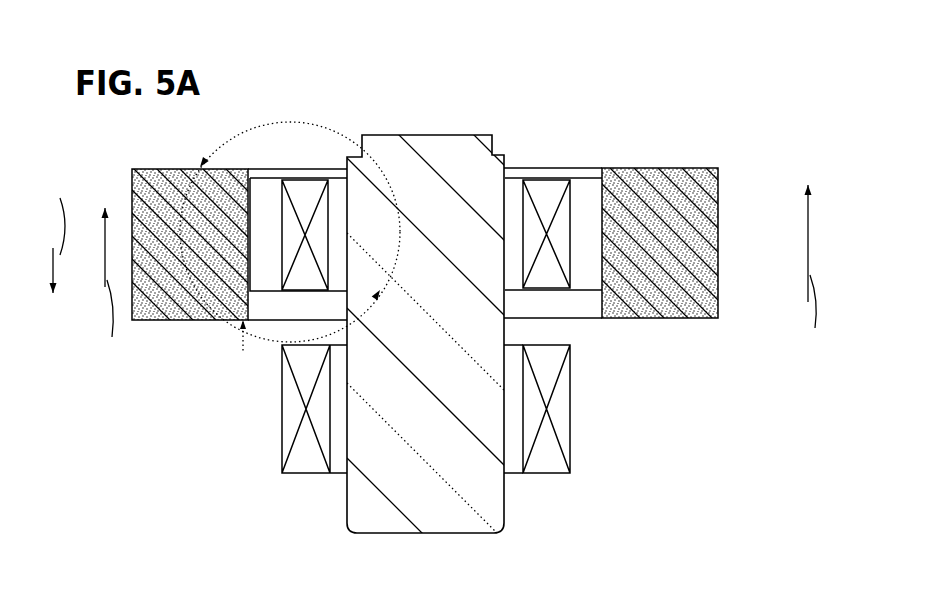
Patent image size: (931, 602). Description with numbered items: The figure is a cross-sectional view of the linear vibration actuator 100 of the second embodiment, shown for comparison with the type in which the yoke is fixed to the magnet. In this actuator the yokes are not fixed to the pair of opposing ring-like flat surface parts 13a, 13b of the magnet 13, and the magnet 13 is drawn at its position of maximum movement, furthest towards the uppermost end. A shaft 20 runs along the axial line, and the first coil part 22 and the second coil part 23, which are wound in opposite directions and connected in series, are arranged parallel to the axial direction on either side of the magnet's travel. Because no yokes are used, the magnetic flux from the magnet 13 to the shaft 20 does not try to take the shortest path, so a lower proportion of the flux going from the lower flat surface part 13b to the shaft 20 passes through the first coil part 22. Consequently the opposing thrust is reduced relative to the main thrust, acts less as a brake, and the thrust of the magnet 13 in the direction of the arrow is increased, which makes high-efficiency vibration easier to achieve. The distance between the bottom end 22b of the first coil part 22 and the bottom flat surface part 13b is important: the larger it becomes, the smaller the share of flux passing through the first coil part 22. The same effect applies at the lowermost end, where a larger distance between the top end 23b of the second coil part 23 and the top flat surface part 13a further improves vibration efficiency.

The linear vibration actuator 100 is at (690, 74).
The shaft 20 is at (450, 148).
The first coil part 22 is at (577, 207).
The bottom end of the first coil part 22b is at (556, 293).
The second coil part 23 is at (560, 420).
The top end of the second coil part 23b is at (550, 334).
The magnet 13 is at (719, 235).
The flat surface part 13a is at (673, 168).
The flat surface part 13b is at (673, 320).